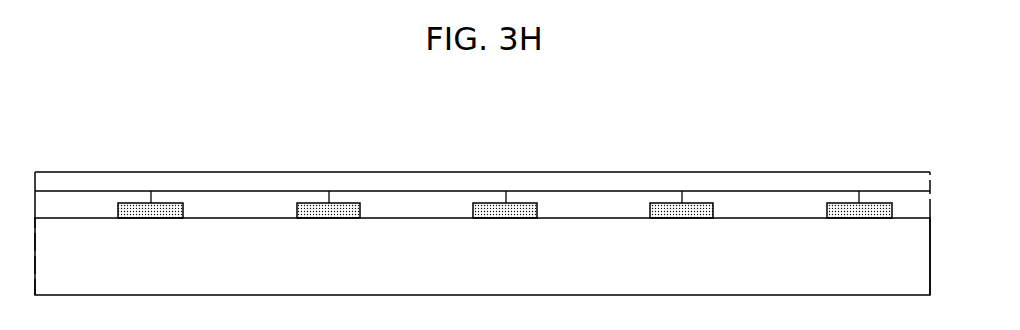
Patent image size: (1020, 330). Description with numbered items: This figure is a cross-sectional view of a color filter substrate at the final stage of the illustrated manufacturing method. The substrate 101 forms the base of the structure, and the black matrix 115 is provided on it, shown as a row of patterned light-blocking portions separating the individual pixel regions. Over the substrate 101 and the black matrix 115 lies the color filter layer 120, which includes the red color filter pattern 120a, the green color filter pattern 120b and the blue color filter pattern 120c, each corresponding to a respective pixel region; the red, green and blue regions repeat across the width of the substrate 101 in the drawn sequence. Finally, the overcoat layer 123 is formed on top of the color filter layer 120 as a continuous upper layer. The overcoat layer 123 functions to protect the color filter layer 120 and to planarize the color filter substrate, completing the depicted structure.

The substrate 101 is at (886, 273).
The black matrix 115 is at (695, 208).
The color filter layer 120 is at (305, 110).
The red color filter pattern 120a is at (277, 202).
The green color filter pattern 120b is at (437, 202).
The blue color filter pattern 120c is at (560, 202).
The overcoat layer 123 is at (782, 187).